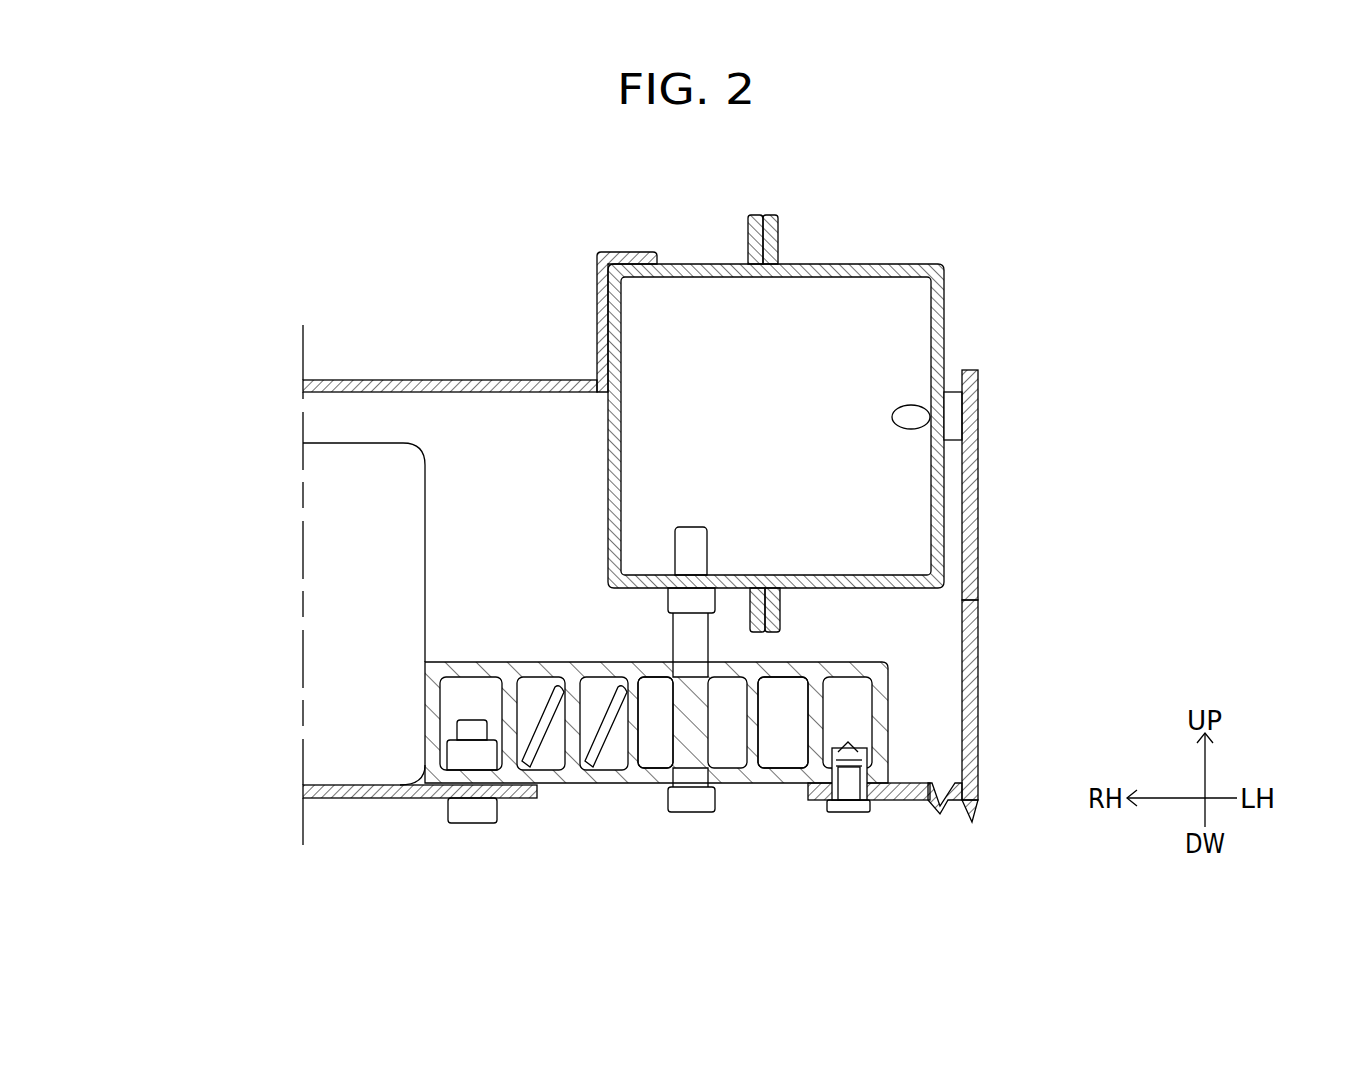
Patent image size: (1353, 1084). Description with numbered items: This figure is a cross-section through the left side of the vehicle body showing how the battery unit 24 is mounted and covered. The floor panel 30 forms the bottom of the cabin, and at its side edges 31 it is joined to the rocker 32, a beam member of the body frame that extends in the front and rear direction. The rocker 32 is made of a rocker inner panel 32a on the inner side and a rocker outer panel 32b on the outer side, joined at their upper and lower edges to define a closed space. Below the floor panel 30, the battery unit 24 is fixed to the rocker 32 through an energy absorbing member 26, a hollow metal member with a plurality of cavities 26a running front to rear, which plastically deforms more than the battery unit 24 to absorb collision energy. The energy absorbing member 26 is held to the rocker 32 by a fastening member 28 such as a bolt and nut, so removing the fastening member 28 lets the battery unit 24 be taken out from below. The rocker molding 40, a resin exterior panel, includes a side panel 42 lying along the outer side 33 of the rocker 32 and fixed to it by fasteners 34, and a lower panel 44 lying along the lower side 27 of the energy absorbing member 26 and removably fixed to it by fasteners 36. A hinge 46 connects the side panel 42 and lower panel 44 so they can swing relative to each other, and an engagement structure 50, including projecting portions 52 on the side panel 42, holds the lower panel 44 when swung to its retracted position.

The battery unit 24 is at (320, 548).
The energy absorbing member 26 is at (656, 799).
The cavities 26a is at (640, 727).
The lower side 27 is at (758, 787).
The fastening member 28 is at (702, 805).
The floor panel 30 is at (430, 380).
The side edges 31 is at (594, 325).
The rocker 32 is at (789, 377).
The rocker inner panel 32a is at (688, 263).
The rocker outer panel 32b is at (836, 263).
The outer side 33 is at (947, 493).
The fasteners 34 is at (953, 418).
The fasteners 36 is at (845, 812).
The rocker molding 40 is at (961, 649).
The side panel 42 is at (980, 702).
The lower panel 44 is at (892, 800).
The hinge 46 is at (940, 814).
The engagement structure 50 is at (1015, 864).
The projecting portions 52 is at (972, 822).